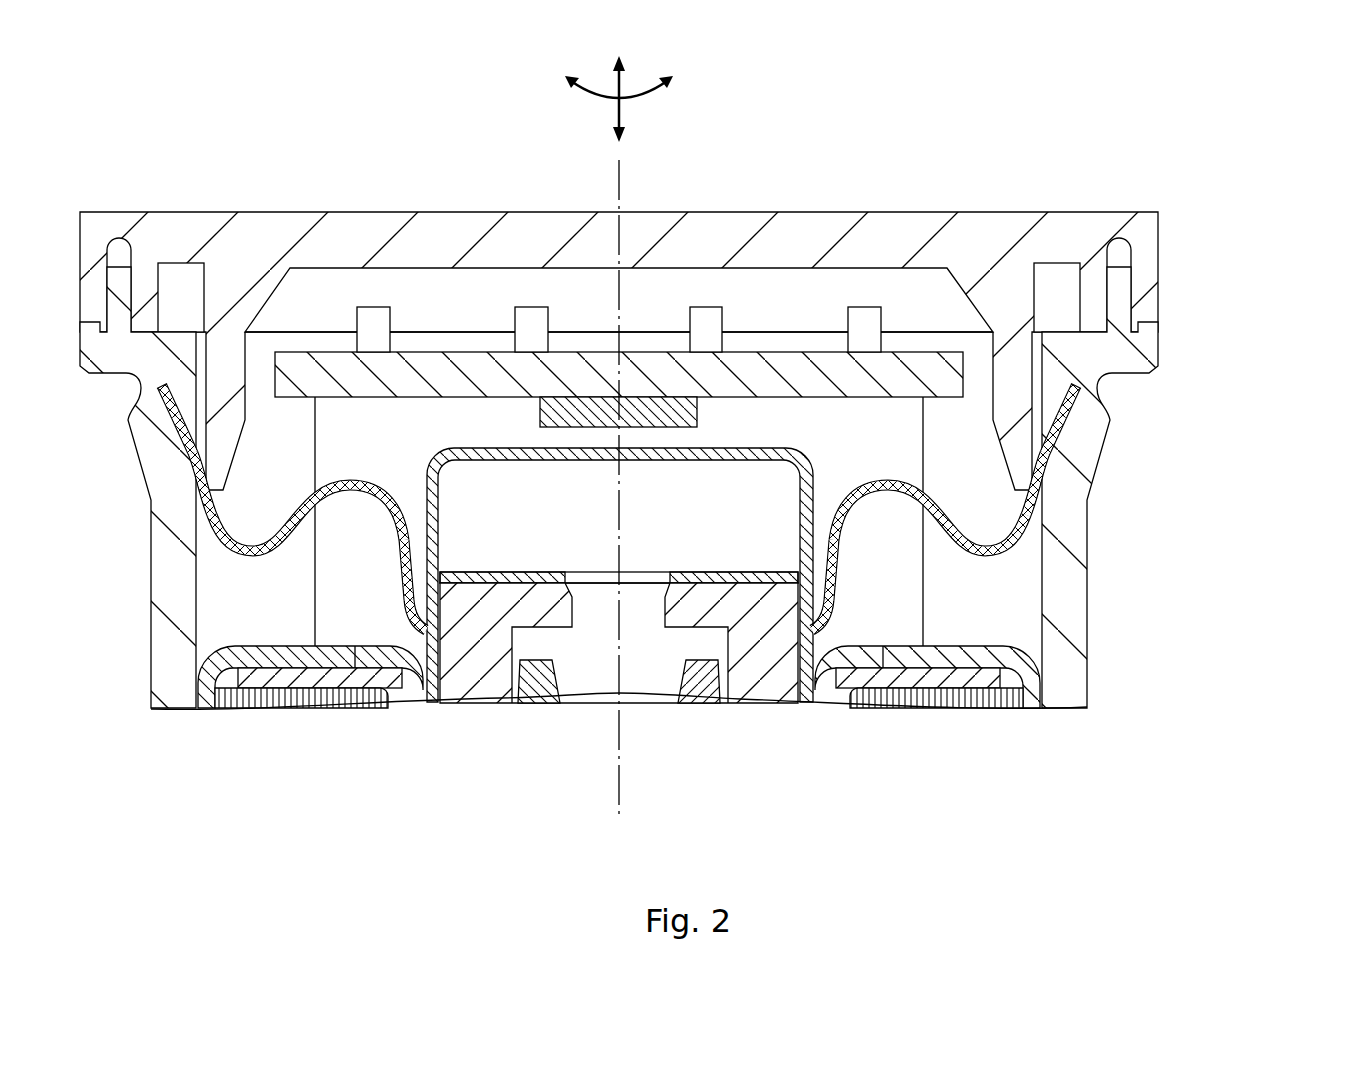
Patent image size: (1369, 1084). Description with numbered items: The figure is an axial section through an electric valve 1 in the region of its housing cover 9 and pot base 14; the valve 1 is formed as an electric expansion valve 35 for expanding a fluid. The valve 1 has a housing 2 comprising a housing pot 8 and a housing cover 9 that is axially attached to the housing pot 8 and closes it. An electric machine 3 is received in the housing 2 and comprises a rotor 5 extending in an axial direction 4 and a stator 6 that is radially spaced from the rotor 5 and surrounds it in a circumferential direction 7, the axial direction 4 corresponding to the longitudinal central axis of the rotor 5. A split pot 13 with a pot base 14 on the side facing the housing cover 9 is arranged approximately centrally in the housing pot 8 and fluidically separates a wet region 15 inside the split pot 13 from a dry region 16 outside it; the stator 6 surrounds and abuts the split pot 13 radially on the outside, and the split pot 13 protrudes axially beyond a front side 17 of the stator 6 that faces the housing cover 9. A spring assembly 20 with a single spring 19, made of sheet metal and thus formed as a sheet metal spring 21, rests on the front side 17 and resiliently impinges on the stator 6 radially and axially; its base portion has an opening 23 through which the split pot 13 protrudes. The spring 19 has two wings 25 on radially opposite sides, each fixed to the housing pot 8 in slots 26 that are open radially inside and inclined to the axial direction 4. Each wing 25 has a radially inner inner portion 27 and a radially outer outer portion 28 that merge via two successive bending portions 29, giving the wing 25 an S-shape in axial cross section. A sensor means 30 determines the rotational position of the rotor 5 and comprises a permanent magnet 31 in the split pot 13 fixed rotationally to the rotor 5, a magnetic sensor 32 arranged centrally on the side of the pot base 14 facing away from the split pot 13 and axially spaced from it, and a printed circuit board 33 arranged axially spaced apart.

The electric valve 1 is at (701, 438).
The electric expansion valve 35 is at (653, 438).
The housing 2 is at (603, 424).
The electric machine 3 is at (1020, 603).
The axial direction 4 is at (622, 112).
The rotor 5 is at (812, 701).
The stator 6 is at (665, 633).
The circumferential direction 7 is at (590, 97).
The housing pot 8 is at (155, 627).
The housing cover 9 is at (253, 237).
The split pot 13 is at (671, 490).
The pot base 14 is at (710, 457).
The wet region 15 is at (585, 521).
The dry region 16 is at (279, 618).
The front side 17 is at (935, 642).
The spring 19 is at (658, 512).
The spring assembly 20 is at (658, 512).
The sheet metal spring 21 is at (658, 512).
The opening 23 is at (818, 625).
The wing 25 is at (194, 528).
The slot 26 is at (157, 398).
The inner portion 27 is at (410, 576).
The outer portion 28 is at (173, 451).
The bending portion 29 is at (255, 546).
The sensor means 30 is at (619, 295).
The permanent magnet 31 is at (497, 577).
The magnetic sensor 32 is at (697, 406).
The printed circuit board 33 is at (583, 373).